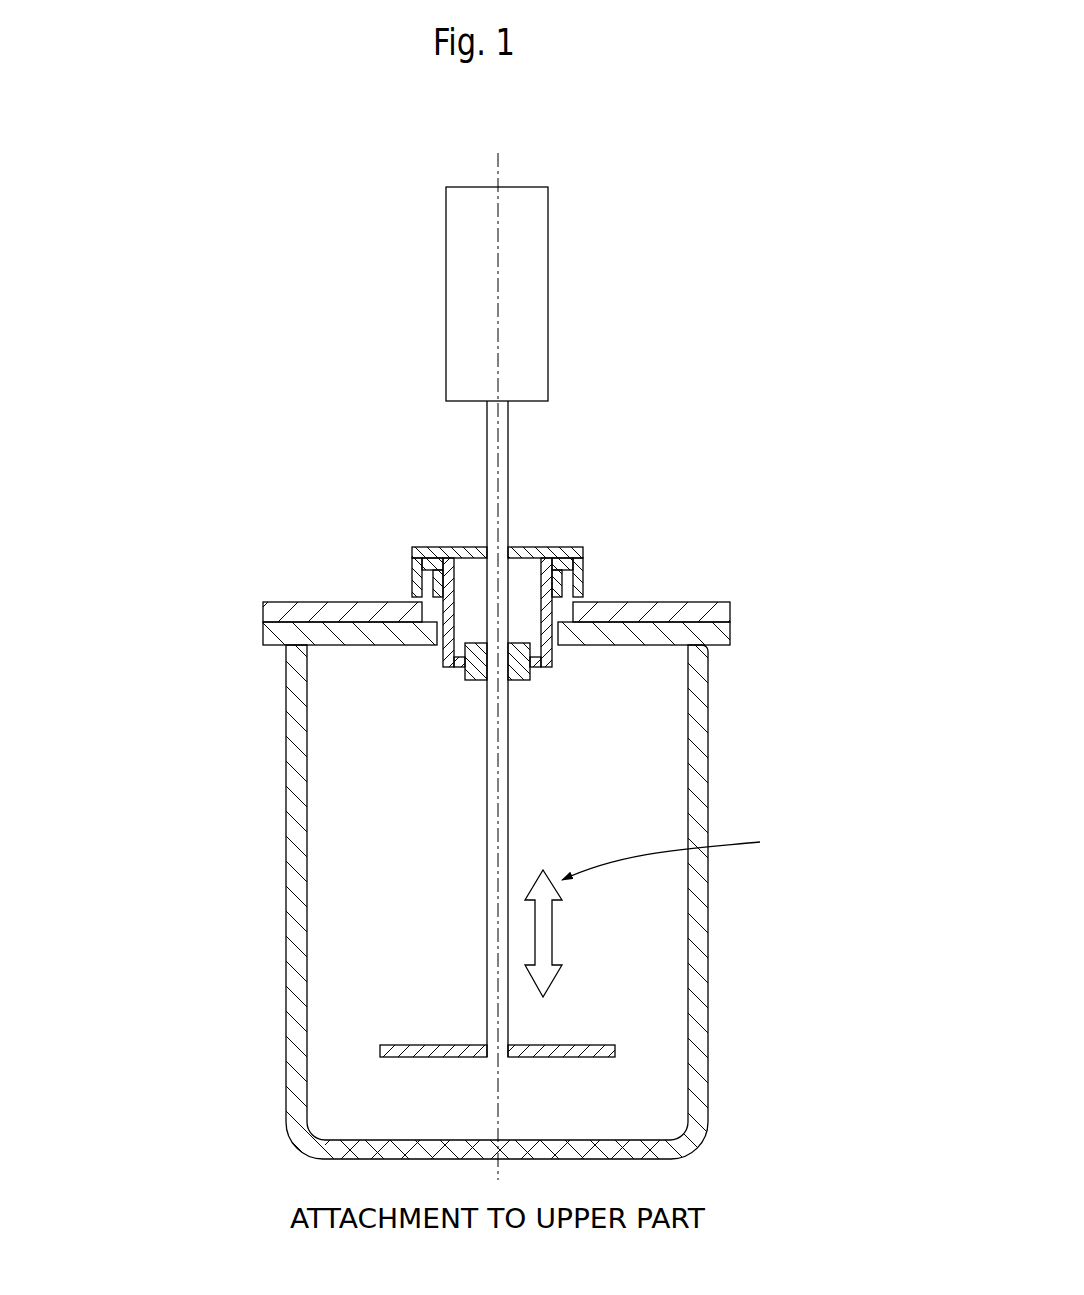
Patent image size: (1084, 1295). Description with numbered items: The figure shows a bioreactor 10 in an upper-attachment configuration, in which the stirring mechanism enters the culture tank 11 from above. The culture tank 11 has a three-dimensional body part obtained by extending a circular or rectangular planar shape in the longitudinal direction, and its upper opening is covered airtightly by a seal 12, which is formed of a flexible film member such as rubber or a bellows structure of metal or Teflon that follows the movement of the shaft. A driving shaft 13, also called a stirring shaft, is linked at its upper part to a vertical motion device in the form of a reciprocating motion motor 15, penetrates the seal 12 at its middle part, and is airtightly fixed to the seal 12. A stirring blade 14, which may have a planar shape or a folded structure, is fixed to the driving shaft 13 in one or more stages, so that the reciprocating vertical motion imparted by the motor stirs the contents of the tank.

The bioreactor 10 is at (782, 197).
The culture tank 11 is at (285, 796).
The seal 12 is at (431, 579).
The driving shaft 13 is at (506, 776).
The stirring blade 14 is at (418, 1041).
The reciprocating motion motor 15 is at (444, 287).